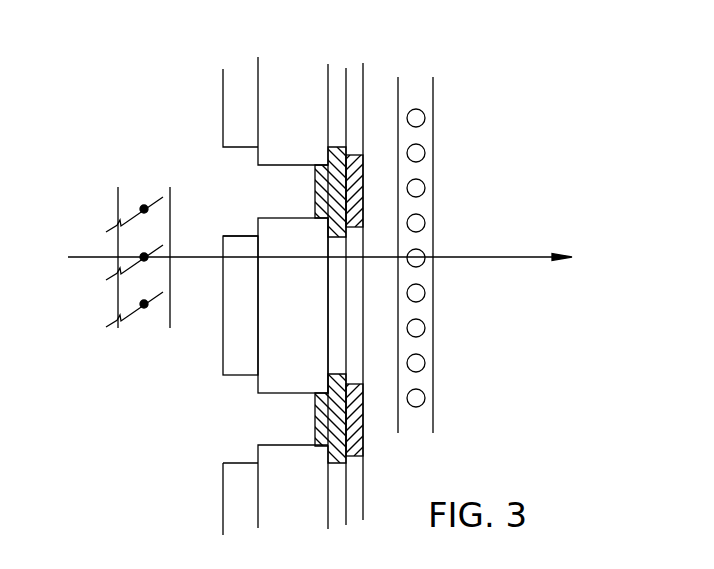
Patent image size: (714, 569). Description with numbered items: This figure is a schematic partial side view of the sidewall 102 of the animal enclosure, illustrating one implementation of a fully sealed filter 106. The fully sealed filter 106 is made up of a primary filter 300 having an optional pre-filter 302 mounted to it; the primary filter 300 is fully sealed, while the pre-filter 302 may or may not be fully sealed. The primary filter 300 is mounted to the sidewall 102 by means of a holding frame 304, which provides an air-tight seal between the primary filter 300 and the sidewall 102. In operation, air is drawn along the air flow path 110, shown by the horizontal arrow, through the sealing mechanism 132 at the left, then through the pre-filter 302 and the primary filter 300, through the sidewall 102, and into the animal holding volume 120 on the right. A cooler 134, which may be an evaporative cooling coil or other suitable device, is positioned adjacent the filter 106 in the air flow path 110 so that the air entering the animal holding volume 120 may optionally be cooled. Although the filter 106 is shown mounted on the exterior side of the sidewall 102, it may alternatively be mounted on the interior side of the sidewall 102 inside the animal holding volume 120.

The sidewall 102 is at (357, 177).
The fully sealed filter 106 is at (210, 297).
The air flow path 110 is at (458, 257).
The animal holding volume 120 is at (538, 158).
The sealing mechanism 132 is at (95, 207).
The cooler 134 is at (445, 133).
The primary filter 300 is at (277, 378).
The pre-filter 302 is at (243, 248).
The holding frame 304 is at (338, 335).